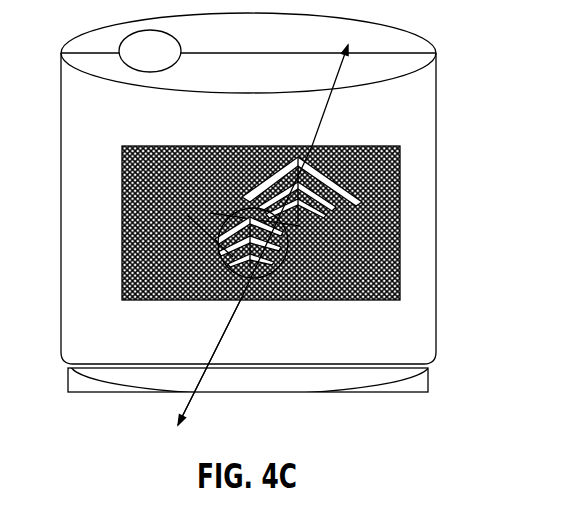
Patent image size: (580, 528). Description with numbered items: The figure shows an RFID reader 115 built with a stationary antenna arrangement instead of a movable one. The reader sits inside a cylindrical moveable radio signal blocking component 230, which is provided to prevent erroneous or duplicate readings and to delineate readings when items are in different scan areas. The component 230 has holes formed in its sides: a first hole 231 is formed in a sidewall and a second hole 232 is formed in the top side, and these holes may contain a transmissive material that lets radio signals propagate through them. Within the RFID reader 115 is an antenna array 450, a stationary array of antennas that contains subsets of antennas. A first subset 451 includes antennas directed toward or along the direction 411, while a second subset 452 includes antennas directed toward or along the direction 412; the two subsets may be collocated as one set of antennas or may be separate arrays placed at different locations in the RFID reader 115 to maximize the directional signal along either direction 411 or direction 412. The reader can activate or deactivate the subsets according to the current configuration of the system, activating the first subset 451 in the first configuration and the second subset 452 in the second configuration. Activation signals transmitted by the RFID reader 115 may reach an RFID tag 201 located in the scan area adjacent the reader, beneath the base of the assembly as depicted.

The RFID reader 115 is at (400, 253).
The RFID tag 201 is at (428, 373).
The component 230 is at (437, 336).
The first hole 231 is at (213, 268).
The second hole 232 is at (123, 43).
The direction 411 is at (192, 397).
The direction 412 is at (330, 104).
The antenna array 450 is at (355, 194).
The first subset 451 is at (253, 280).
The second subset 452 is at (357, 203).